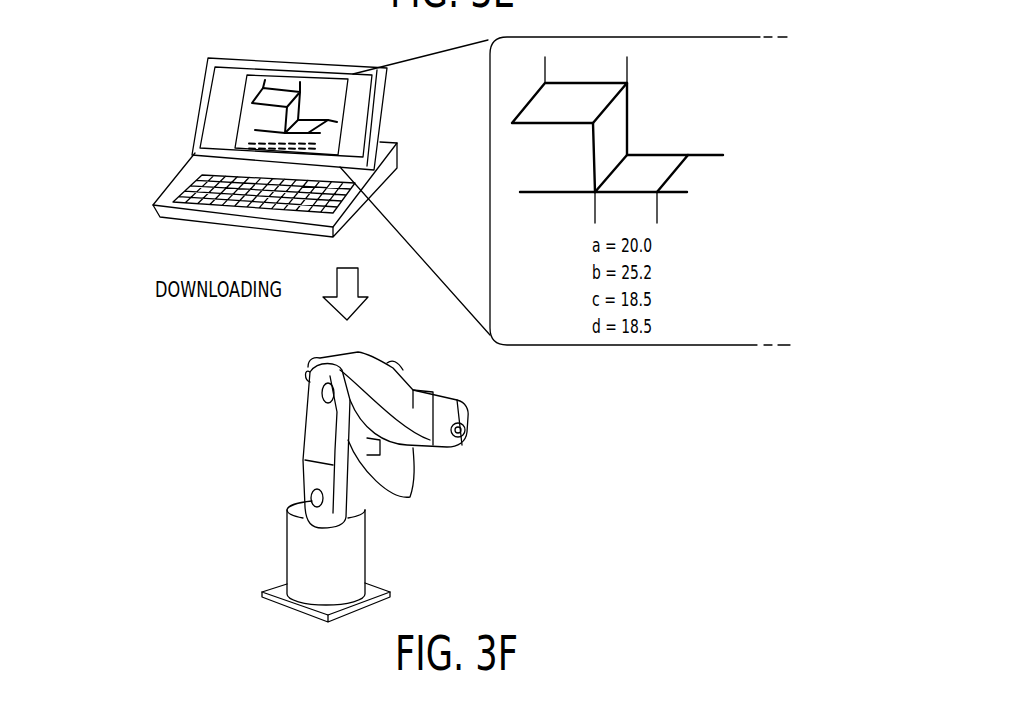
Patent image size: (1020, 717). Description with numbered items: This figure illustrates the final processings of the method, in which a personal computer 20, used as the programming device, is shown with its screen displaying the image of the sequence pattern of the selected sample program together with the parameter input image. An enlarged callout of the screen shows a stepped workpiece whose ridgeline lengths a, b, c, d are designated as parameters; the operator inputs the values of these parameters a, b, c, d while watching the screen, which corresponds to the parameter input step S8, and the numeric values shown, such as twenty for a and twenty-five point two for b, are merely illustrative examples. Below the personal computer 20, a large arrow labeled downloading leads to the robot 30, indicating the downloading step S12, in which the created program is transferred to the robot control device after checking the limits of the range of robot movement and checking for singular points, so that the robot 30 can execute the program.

The personal computer 20 is at (186, 126).
The robot 30 is at (270, 477).
The parameter input step S8 is at (107, 58).
The downloading step S12 is at (160, 397).
The ridgeline length a is at (623, 72).
The ridgeline length b is at (567, 127).
The ridgeline length c is at (653, 202).
The ridgeline length d is at (704, 155).